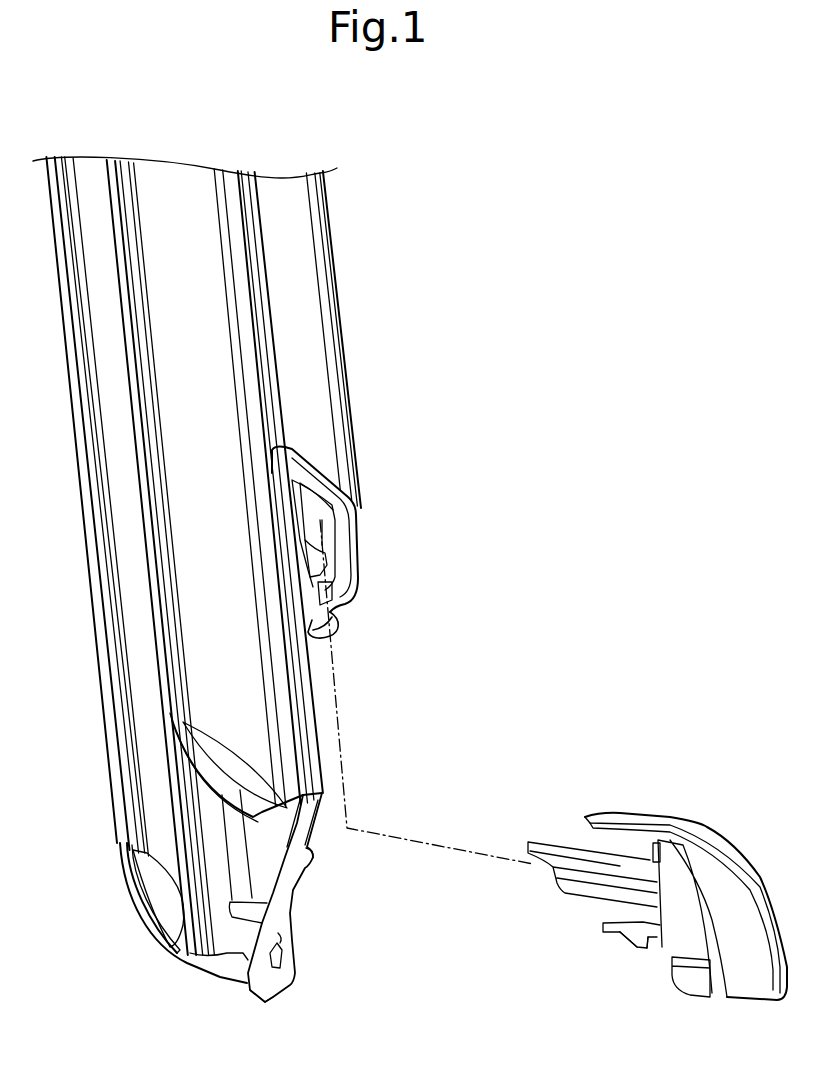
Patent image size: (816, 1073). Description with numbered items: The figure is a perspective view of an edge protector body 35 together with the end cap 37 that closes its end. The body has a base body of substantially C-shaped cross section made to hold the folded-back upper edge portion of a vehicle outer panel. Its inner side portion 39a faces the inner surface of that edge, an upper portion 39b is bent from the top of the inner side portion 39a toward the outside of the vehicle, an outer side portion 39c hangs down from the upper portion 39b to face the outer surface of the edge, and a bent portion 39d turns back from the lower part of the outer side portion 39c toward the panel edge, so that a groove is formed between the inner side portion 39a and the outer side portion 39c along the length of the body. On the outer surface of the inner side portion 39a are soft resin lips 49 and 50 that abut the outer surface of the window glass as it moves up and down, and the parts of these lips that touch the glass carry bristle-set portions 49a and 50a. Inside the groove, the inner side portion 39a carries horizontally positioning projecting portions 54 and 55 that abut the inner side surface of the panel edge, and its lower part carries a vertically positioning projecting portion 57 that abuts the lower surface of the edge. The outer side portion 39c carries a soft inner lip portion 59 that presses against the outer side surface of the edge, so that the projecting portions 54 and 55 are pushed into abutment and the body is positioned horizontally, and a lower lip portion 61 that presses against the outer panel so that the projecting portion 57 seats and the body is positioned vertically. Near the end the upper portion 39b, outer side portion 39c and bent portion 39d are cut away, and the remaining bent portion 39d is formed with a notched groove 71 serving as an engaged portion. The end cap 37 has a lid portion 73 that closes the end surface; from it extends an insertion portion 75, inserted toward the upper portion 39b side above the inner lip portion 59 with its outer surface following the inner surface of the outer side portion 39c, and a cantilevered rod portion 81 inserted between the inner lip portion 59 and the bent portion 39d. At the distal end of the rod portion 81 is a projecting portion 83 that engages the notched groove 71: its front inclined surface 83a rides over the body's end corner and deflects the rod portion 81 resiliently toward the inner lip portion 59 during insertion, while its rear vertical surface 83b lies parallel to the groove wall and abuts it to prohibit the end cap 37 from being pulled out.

The edge protector body 35 is at (343, 292).
The end cap 37 is at (710, 812).
The inner side portion 39a is at (293, 890).
The upper portion 39b is at (307, 472).
The outer side portion 39c is at (347, 532).
The bent portion 39d is at (320, 587).
The lip 49 is at (213, 742).
The bristle-set portion 49a is at (213, 773).
The lip 50 is at (153, 883).
The bristle-set portion 50a is at (147, 917).
The horizontally positioning projecting portion 54 is at (310, 860).
The horizontally positioning projecting portion 55 is at (283, 947).
The vertically positioning projecting portion 57 is at (280, 978).
The inner lip portion 59 is at (310, 507).
The lower lip portion 61 is at (337, 625).
The notched groove 71 is at (317, 558).
The lid portion 73 is at (687, 933).
The insertion portion 75 is at (577, 893).
The rod portion 81 is at (623, 930).
The projecting portion 83 is at (633, 953).
The inclined surface 83a is at (630, 943).
The vertical surface 83b is at (640, 953).